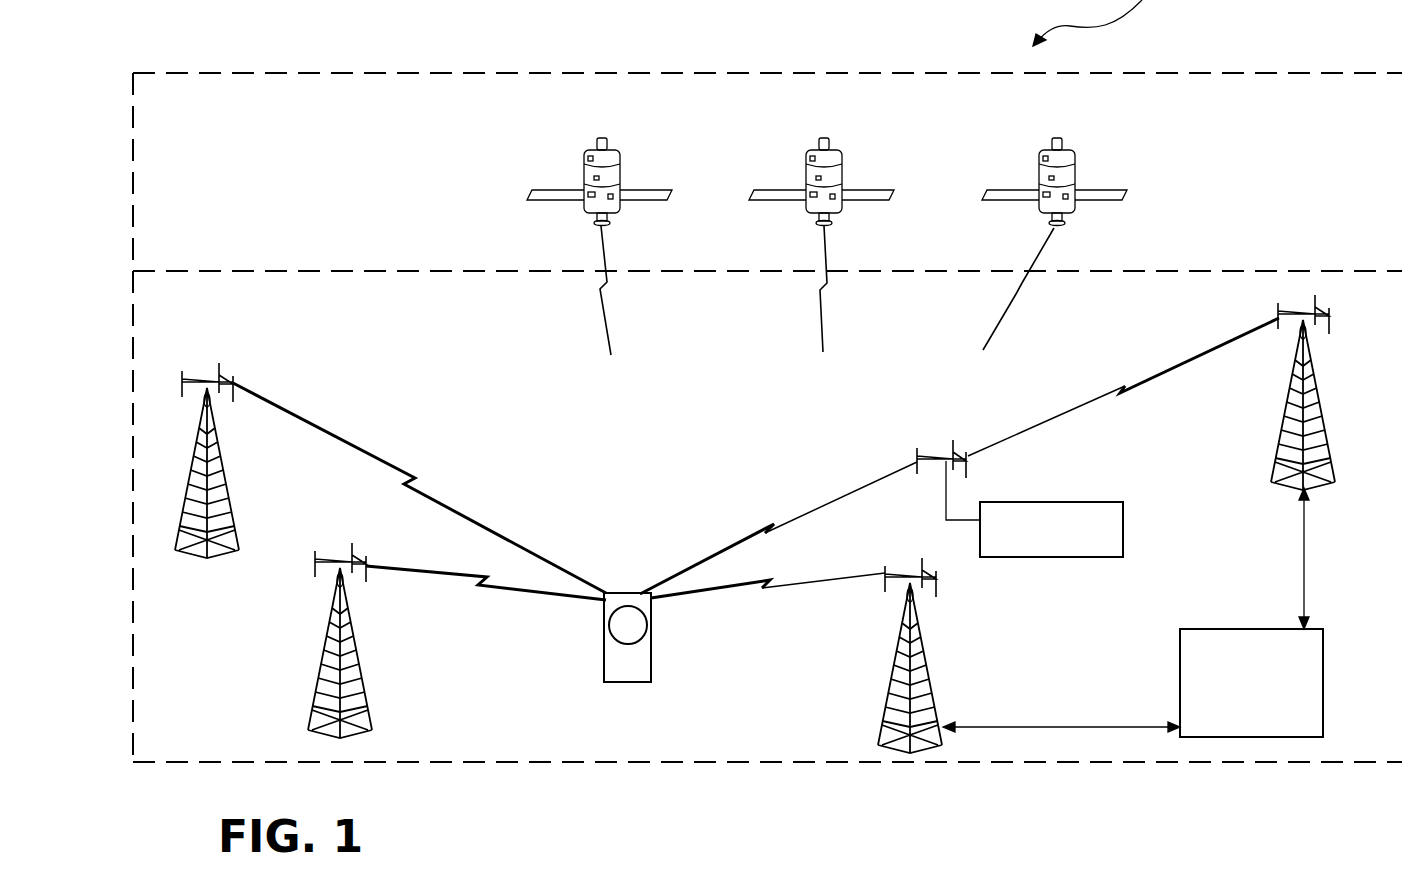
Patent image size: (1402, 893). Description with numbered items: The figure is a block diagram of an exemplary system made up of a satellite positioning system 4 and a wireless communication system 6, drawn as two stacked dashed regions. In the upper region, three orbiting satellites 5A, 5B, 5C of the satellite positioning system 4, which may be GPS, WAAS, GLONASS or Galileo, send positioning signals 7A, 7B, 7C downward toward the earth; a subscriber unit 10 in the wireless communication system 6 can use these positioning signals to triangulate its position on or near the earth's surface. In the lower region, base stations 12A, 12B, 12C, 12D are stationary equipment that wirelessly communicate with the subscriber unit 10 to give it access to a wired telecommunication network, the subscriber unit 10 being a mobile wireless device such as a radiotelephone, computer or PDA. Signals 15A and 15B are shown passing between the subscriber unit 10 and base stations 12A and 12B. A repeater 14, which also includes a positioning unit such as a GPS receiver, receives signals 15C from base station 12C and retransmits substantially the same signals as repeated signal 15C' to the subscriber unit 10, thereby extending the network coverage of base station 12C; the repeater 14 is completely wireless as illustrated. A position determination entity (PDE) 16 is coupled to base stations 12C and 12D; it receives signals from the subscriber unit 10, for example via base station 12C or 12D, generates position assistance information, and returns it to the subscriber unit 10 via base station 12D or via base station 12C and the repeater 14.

The satellite positioning system 4 is at (296, 133).
The wireless communication system 6 is at (312, 325).
The satellite 5A is at (606, 138).
The satellite 5B is at (828, 138).
The satellite 5C is at (1060, 136).
The positioning signal 7A is at (606, 266).
The positioning signal 7B is at (802, 266).
The positioning signal 7C is at (1010, 264).
The subscriber unit 10 is at (651, 665).
The base station 12A is at (240, 525).
The base station 12B is at (356, 712).
The base station 12C is at (1282, 437).
The base station 12D is at (890, 712).
The repeater 14 is at (1123, 527).
The signals 15A is at (422, 480).
The signals 15B is at (507, 594).
The signals 15C is at (1123, 387).
The repeated signal 15C' is at (778, 525).
The position determination entity (PDE) 16 is at (1323, 683).